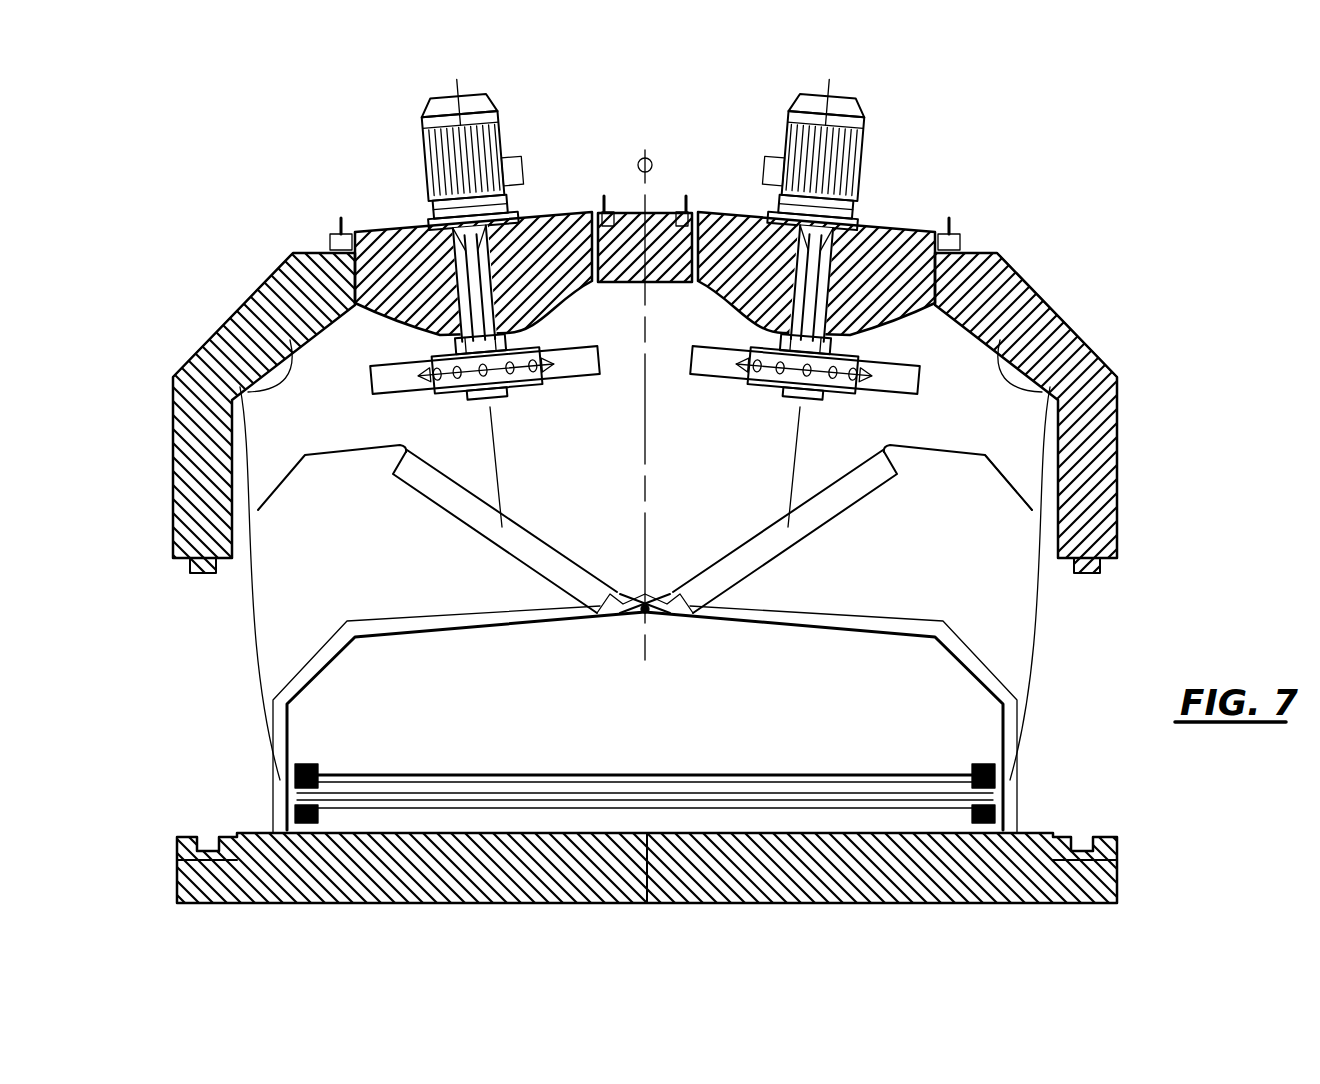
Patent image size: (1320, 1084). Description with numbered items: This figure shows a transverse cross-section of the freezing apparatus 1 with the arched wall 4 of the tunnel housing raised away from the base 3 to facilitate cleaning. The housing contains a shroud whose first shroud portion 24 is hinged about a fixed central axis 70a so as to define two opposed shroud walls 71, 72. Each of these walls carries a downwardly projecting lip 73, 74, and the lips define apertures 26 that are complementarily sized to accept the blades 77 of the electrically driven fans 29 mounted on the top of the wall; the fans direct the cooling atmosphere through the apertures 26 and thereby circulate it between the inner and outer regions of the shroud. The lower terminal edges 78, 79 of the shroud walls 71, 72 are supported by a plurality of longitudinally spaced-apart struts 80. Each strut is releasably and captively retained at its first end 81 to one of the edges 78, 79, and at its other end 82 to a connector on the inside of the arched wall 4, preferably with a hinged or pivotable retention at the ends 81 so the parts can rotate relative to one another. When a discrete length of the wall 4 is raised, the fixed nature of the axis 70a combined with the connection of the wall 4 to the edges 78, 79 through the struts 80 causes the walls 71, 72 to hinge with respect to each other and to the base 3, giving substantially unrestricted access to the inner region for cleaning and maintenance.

The freezing apparatus 1 is at (1064, 216).
The base 3 is at (1002, 862).
The arched wall 4 is at (197, 465).
The first shroud portion 24 is at (982, 387).
The apertures 26 is at (547, 515).
The electrically driven fans 29 is at (503, 143).
The central axis 70a is at (650, 592).
The shroud wall 71 is at (350, 452).
The shroud wall 72 is at (935, 447).
The downwardly projecting lip 73 is at (462, 500).
The downwardly projecting lip 74 is at (782, 543).
The blades 77 is at (387, 367).
The lower terminal edge 78 is at (278, 512).
The lower terminal edge 79 is at (1007, 492).
The struts 80 is at (237, 438).
The first ends 81 is at (268, 486).
The other ends 82 is at (262, 315).